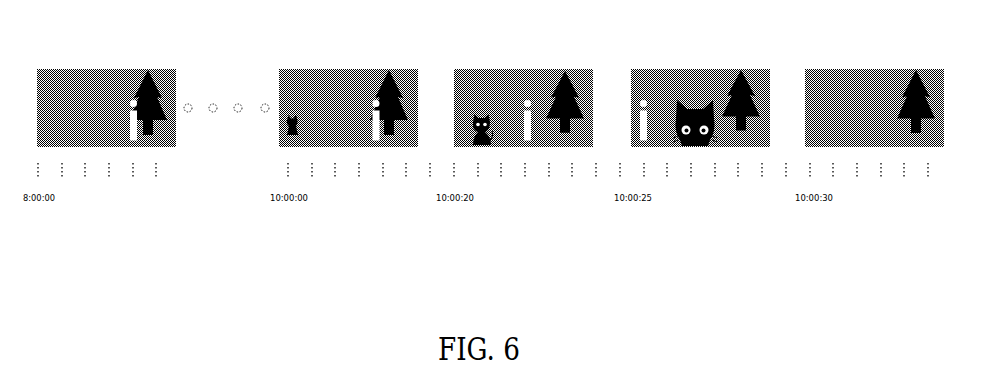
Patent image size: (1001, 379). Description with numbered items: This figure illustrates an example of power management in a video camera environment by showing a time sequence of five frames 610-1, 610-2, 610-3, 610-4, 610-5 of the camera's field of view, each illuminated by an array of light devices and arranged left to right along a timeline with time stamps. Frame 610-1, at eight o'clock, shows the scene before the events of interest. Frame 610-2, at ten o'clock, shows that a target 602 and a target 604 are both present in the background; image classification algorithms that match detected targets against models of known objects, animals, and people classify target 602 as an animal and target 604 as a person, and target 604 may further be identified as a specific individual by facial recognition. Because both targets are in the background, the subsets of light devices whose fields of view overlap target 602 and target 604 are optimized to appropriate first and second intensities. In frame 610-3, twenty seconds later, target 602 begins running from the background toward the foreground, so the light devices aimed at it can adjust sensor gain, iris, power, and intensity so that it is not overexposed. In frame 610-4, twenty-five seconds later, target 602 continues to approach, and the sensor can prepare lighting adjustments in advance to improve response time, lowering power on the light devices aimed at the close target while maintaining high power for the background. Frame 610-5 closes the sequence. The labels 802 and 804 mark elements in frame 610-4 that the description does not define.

The frame 610-1 is at (106, 101).
The frame 610-2 is at (345, 101).
The frame 610-3 is at (522, 101).
The frame 610-4 is at (698, 101).
The frame 610-5 is at (872, 101).
The target 602 is at (280, 108).
The target 604 is at (123, 66).
The tree object 802 is at (730, 67).
The enlarged cat object 804 is at (667, 68).